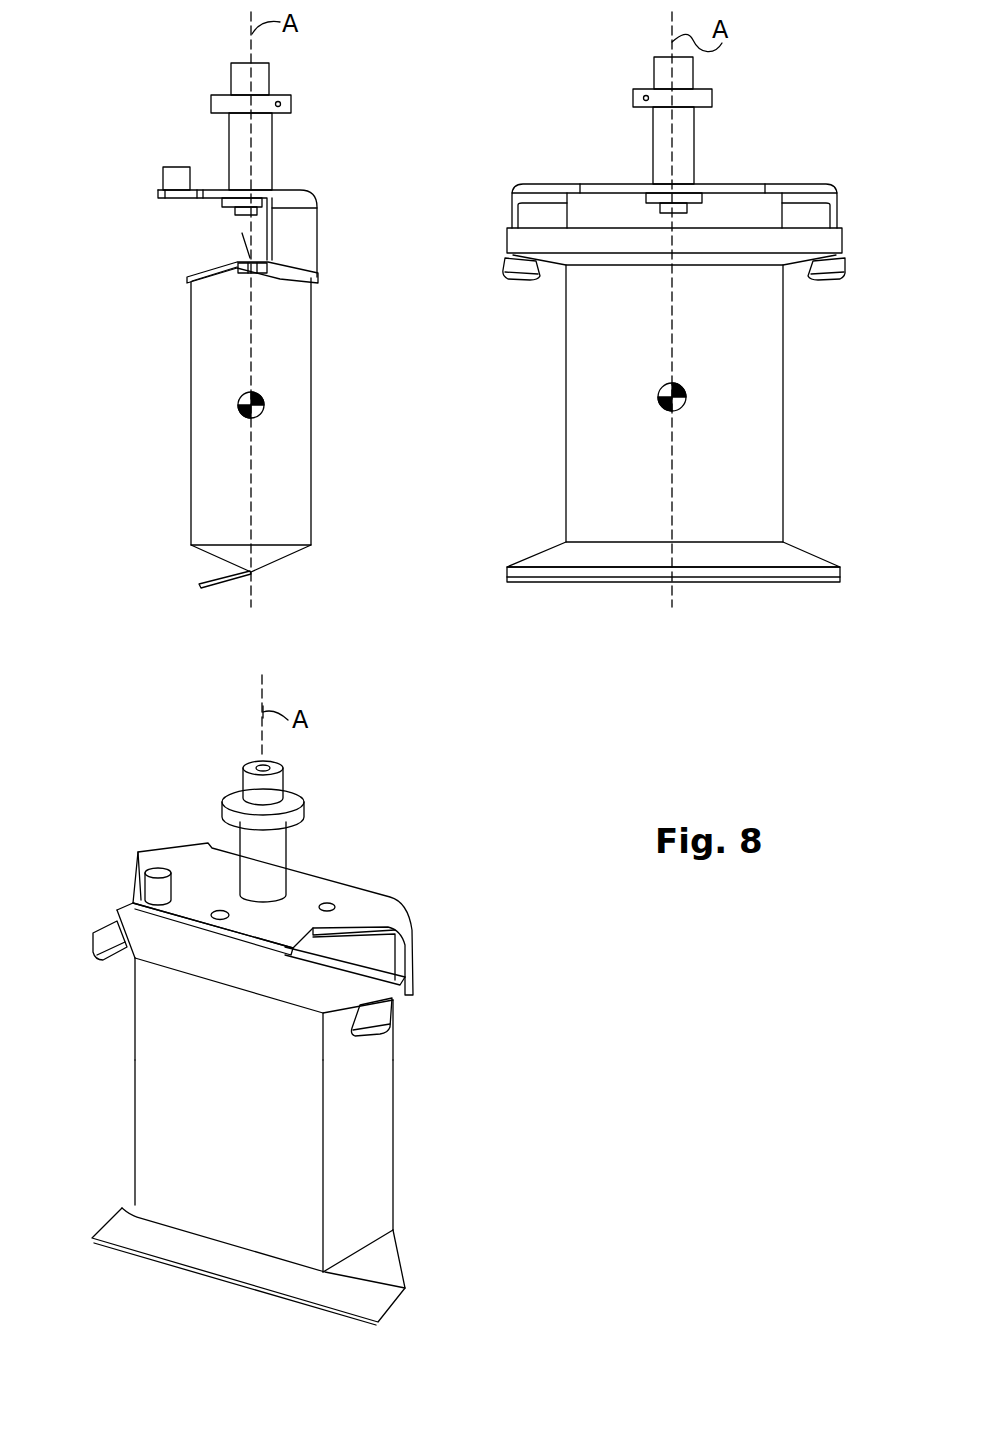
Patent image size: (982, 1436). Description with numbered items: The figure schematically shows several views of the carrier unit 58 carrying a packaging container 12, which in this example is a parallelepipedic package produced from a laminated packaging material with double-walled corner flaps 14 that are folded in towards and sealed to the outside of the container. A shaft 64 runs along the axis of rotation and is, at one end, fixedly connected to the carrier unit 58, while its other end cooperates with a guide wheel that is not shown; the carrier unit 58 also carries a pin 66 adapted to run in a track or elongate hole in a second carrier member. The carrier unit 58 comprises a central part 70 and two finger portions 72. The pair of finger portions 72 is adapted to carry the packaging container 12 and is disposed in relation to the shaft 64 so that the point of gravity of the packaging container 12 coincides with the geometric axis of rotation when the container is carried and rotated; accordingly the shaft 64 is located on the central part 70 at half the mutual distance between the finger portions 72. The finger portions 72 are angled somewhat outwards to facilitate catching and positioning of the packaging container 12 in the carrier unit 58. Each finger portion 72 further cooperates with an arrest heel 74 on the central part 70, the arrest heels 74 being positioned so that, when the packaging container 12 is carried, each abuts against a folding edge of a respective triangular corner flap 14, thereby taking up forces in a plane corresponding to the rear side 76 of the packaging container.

The packaging container 12 is at (580, 390).
The corner flaps 14 is at (140, 930).
The carrier unit 58 is at (498, 173).
The shaft 64 is at (683, 136).
The pin 66 is at (172, 176).
The central part 70 is at (280, 920).
The finger portions 72 is at (100, 945).
The arrest heel 74 is at (528, 212).
The rear side of the packaging container 76 is at (311, 470).